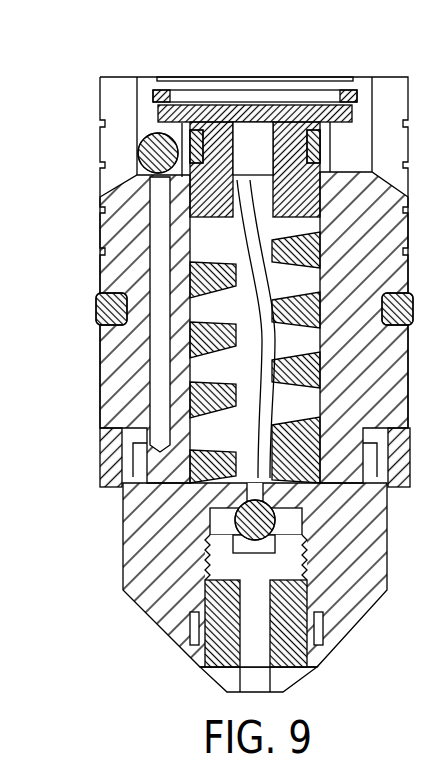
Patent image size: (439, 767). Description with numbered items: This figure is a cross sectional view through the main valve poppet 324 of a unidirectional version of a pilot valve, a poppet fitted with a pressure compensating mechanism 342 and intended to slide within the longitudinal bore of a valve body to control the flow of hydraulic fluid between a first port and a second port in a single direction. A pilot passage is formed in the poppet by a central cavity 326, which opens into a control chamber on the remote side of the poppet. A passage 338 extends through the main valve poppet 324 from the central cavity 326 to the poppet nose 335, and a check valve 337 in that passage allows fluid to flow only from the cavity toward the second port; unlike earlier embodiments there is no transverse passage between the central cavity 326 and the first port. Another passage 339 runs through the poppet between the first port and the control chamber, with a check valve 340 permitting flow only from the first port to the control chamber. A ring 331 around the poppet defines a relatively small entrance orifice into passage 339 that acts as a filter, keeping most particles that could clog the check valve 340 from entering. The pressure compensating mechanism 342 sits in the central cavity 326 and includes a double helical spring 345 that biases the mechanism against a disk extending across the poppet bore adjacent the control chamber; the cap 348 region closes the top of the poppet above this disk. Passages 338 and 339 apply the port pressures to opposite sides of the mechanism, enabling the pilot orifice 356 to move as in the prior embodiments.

The main valve poppet 324 is at (121, 571).
The central cavity 326 is at (203, 259).
The ring 331 is at (100, 455).
The poppet nose 335 is at (208, 672).
The check valve 337 is at (257, 527).
The passage 338 is at (247, 497).
The passage 339 is at (152, 365).
The check valve 340 is at (148, 158).
The pressure compensating mechanism 342 is at (200, 223).
The double helical spring 345 is at (205, 338).
The cap 348 is at (160, 108).
The pilot orifice 356 is at (251, 120).